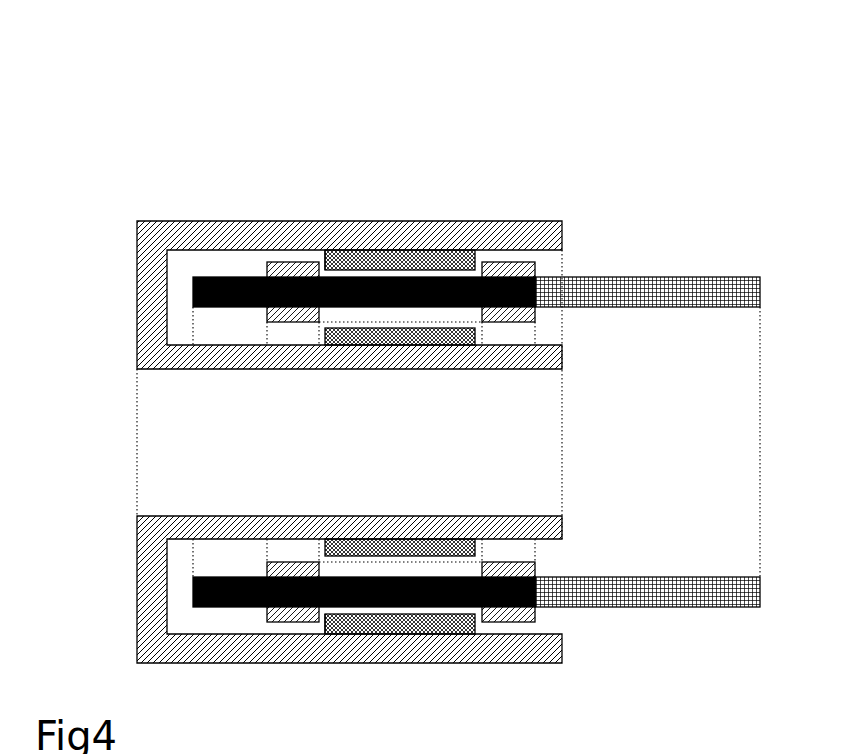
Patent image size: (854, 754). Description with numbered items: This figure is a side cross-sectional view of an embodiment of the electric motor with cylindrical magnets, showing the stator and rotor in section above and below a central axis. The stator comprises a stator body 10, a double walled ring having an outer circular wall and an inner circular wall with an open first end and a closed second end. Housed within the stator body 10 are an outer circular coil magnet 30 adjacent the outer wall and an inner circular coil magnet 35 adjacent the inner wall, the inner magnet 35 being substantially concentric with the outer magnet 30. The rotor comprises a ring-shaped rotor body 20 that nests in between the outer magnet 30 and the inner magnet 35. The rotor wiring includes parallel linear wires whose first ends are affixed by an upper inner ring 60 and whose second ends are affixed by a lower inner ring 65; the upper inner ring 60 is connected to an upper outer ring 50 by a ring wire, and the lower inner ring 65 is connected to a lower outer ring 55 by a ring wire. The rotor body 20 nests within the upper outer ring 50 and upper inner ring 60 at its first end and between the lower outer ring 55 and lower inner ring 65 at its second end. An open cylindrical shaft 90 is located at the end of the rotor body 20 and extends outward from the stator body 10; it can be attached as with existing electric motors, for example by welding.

The stator body 10 is at (185, 232).
The rotor body 20 is at (418, 285).
The outer circular coil magnet 30 is at (388, 253).
The inner circular coil magnet 35 is at (420, 338).
The upper outer ring 50 is at (509, 265).
The lower outer ring 55 is at (290, 262).
The upper inner ring 60 is at (535, 302).
The lower inner ring 65 is at (335, 254).
The open cylindrical shaft 90 is at (673, 288).